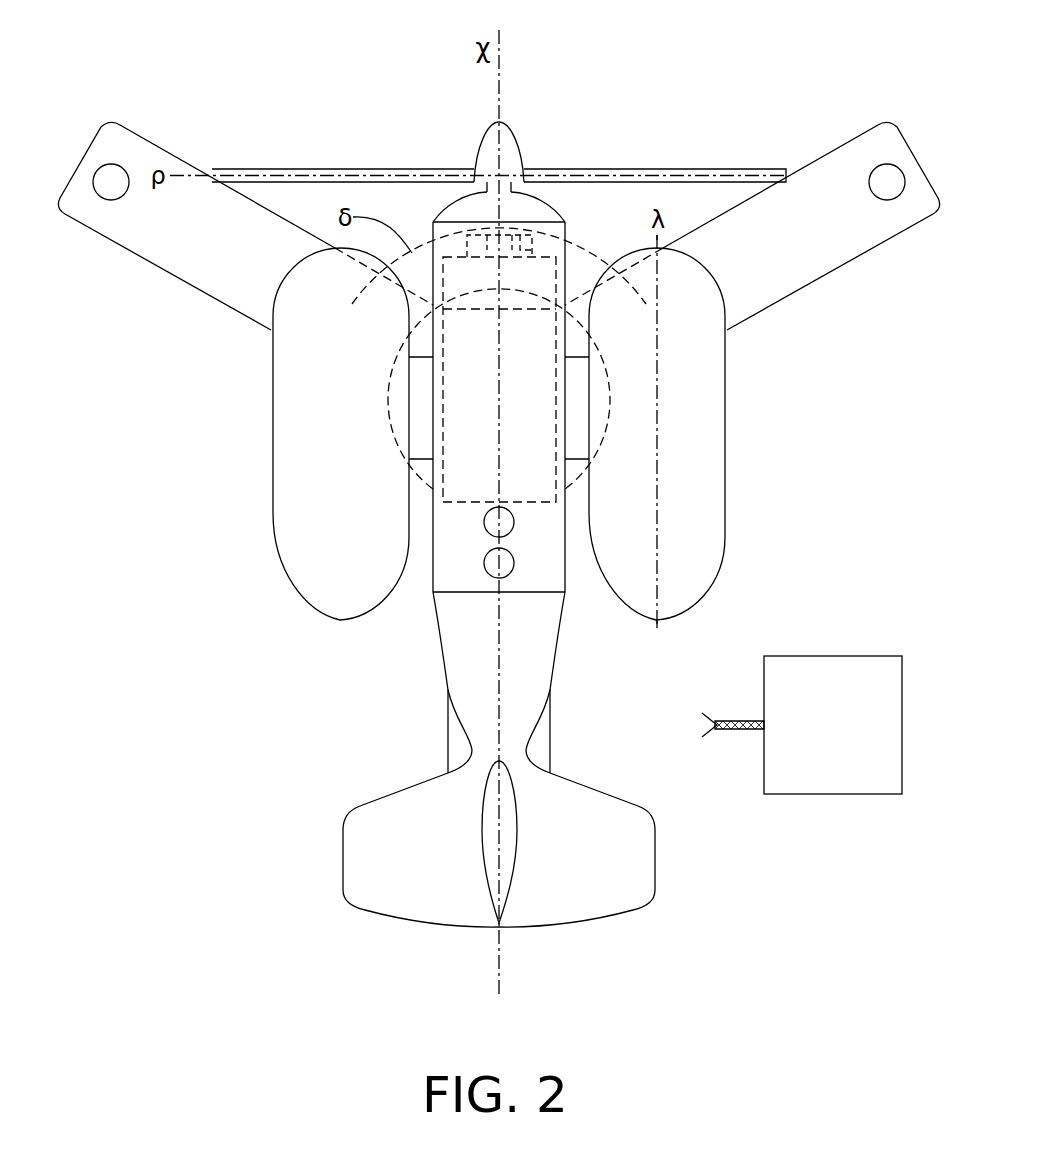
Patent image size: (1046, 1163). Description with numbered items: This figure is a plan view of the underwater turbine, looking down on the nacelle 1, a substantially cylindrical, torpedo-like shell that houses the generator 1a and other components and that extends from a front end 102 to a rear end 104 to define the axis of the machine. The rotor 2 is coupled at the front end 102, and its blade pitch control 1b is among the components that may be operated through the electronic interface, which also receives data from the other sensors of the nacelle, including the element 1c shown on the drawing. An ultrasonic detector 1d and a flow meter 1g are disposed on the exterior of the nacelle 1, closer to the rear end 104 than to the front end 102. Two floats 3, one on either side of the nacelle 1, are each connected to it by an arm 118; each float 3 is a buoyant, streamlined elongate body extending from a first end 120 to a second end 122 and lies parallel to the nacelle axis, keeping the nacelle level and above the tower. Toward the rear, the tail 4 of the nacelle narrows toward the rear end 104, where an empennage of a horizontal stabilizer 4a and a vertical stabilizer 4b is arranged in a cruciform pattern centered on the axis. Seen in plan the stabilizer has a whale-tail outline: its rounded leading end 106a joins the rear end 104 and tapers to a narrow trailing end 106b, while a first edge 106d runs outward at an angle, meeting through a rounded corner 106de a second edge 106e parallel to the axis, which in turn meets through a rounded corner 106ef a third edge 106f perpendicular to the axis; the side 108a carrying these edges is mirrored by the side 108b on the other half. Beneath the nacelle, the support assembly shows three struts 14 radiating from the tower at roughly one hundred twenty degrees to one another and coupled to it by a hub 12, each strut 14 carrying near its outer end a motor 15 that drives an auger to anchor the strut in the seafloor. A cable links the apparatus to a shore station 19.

The nacelle 1 is at (567, 583).
The generator 1a is at (532, 478).
The blade pitch control 1b is at (522, 243).
The fuselage forward section 1c is at (455, 277).
The ultrasonic detector 1d is at (484, 563).
The flow meter 1g is at (484, 522).
The rotor 2 is at (604, 170).
The float 3 is at (290, 423).
The tail 4 is at (465, 657).
The horizontal stabilizer 4a is at (510, 888).
The vertical stabilizer 4b is at (360, 848).
The hub 12 is at (572, 337).
The strut 14 is at (160, 268).
The motor 15 is at (113, 175).
The shore station 19 is at (820, 734).
The front end 102 is at (458, 210).
The rear end 104 is at (483, 750).
The first leading end 106a is at (540, 760).
The second trailing end 106b is at (497, 920).
The first edge 106d is at (597, 789).
The corner 106de is at (648, 813).
The second edge 106e is at (657, 867).
The corner 106ef is at (655, 900).
The third edge 106f is at (605, 920).
The side 108a is at (592, 853).
The side 108b is at (407, 882).
The arm 118 is at (420, 422).
The first end 120 is at (660, 248).
The second end 122 is at (662, 623).